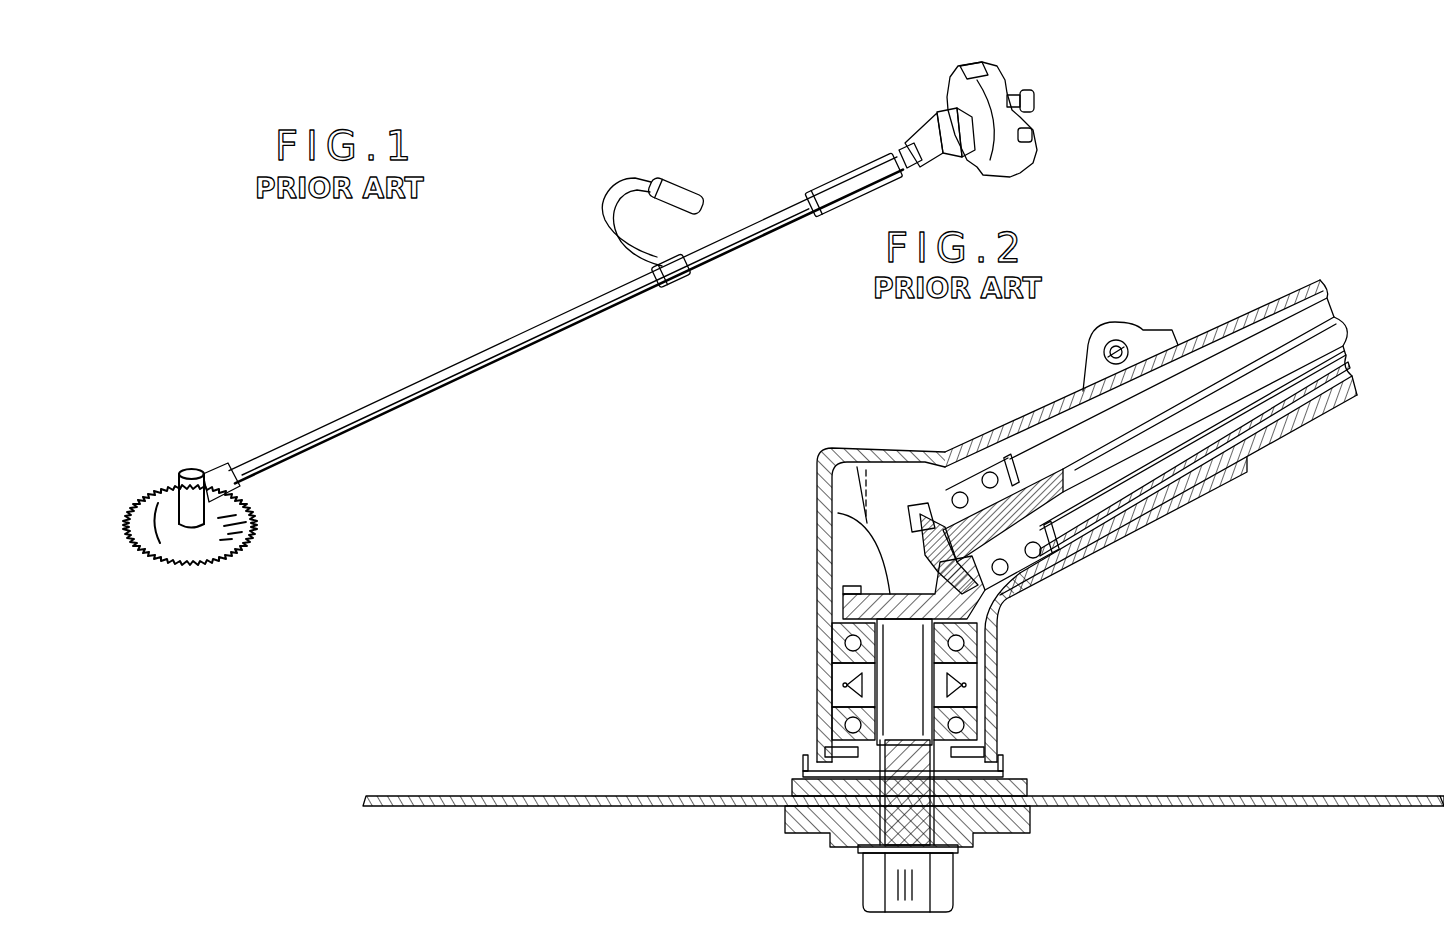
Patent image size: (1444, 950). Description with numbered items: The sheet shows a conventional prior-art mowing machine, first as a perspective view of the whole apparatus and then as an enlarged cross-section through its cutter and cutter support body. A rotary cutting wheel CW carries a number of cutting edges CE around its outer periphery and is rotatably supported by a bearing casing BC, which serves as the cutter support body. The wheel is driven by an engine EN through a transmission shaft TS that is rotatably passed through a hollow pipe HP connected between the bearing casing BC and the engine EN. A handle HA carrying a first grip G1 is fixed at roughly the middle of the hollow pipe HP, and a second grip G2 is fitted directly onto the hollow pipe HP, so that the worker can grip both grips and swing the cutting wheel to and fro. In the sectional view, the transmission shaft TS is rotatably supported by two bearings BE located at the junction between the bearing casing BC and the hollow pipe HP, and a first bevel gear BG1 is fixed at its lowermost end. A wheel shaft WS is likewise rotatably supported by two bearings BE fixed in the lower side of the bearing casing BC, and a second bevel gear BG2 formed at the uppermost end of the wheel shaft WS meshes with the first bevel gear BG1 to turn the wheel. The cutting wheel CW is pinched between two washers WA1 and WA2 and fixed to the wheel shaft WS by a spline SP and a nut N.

In FIG. 1, the hollow pipe HP is at (481, 364).
In FIG. 2, the hollow pipe HP is at (1252, 310).
In FIG. 1, the handle HA is at (620, 190).
In FIG. 1, the first grip G1 is at (684, 190).
In FIG. 1, the second grip G2 is at (862, 182).
In FIG. 1, the engine EN is at (995, 88).
In FIG. 1, the bearing casing BC is at (195, 472).
In FIG. 2, the bearing casing BC is at (822, 472).
In FIG. 1, the rotary cutting wheel CW is at (175, 563).
In FIG. 2, the rotary cutting wheel CW is at (1250, 795).
In FIG. 1, the cutting edges CE is at (238, 563).
In FIG. 2, the cutting edges CE is at (1432, 795).
In FIG. 2, the first bevel gear BG1 is at (930, 457).
In FIG. 2, the second bevel gear BG2 is at (893, 594).
In FIG. 2, the bearings BE is at (957, 494).
In FIG. 2, the wheel shaft WS is at (907, 667).
In FIG. 2, the first washer WA1 is at (1023, 775).
In FIG. 2, the second washer WA2 is at (1020, 823).
In FIG. 2, the spline SP is at (947, 827).
In FIG. 2, the nut N is at (873, 883).
In FIG. 2, the transmission shaft TS is at (1332, 318).